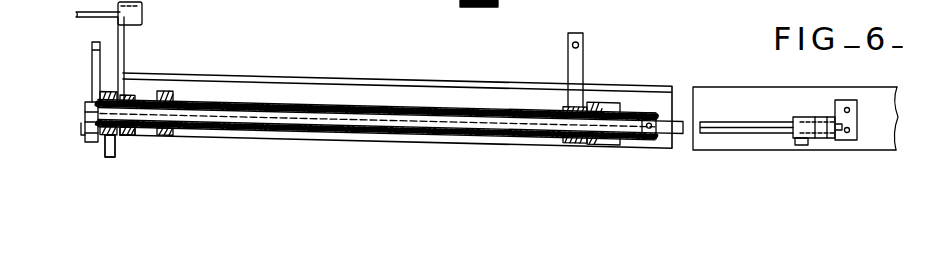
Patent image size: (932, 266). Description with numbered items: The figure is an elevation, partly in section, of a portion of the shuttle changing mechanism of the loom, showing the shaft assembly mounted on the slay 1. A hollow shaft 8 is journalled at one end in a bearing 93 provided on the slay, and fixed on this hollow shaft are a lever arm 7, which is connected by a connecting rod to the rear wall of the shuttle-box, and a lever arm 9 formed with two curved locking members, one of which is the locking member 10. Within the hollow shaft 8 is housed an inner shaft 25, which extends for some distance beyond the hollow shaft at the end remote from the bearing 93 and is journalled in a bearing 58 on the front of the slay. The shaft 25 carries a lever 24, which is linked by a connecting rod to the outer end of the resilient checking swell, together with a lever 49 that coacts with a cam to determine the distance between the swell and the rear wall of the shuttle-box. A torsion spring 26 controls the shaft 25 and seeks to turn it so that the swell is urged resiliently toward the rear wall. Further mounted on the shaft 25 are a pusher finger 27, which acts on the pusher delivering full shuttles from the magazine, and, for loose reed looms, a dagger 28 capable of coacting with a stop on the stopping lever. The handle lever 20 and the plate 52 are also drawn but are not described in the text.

The slay 1 is at (715, 100).
The lever arm 7 is at (583, 58).
The hollow shaft 8 is at (312, 132).
The lever arm 9 is at (105, 150).
The curved locking member 10 is at (110, 146).
The handle lever 20 is at (152, 103).
The lever 24 is at (93, 75).
The shaft 25 is at (425, 124).
The torsion spring 26 is at (628, 117).
The pusher finger 27 is at (87, 137).
The dagger 28 is at (802, 137).
The lever 49 is at (85, 118).
The plate 52 is at (827, 143).
The bearing 58 is at (597, 139).
The bearing 93 is at (125, 133).